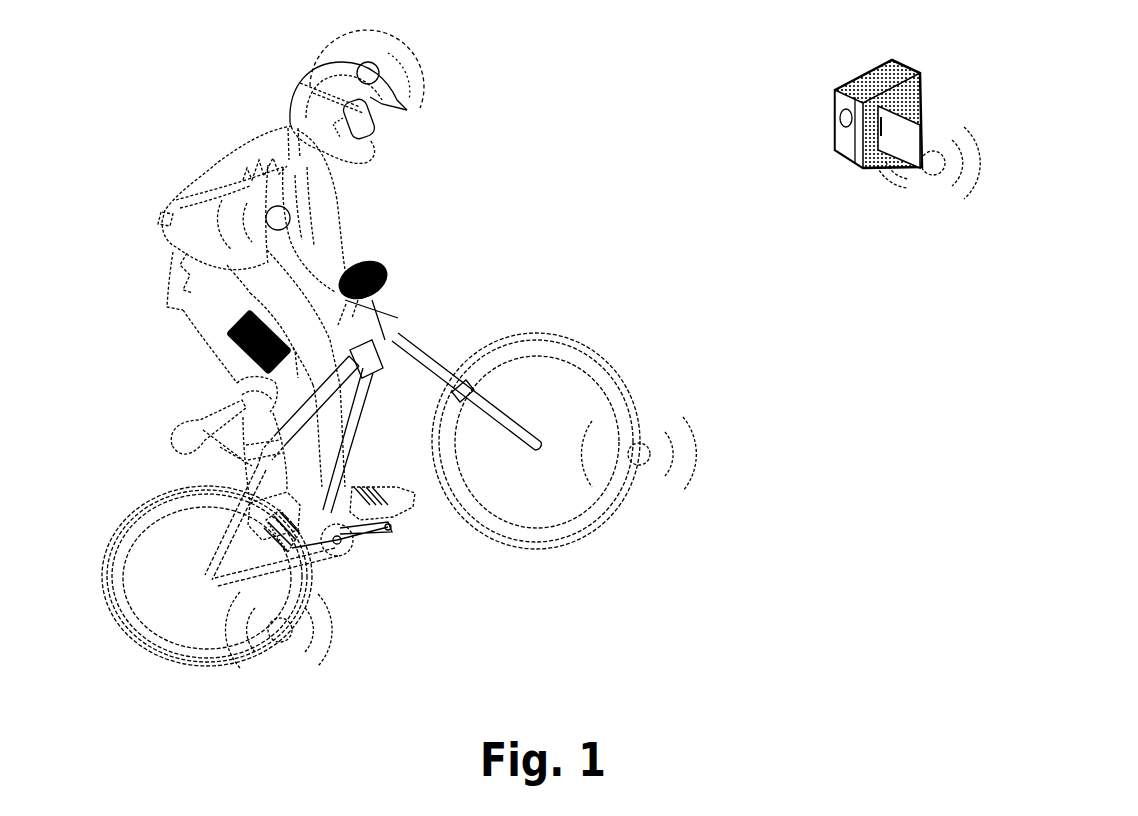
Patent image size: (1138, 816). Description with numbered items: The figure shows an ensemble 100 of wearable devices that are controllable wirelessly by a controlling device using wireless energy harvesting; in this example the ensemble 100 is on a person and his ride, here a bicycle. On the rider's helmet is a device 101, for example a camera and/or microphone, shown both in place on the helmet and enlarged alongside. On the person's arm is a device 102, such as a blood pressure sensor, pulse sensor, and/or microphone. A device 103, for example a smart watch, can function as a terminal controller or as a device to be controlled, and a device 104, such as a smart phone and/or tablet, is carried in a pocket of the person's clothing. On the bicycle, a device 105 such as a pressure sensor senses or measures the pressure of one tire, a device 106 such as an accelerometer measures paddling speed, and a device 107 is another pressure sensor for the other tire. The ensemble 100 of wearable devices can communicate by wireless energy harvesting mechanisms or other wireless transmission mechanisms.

The ensemble of wearable devices 100 is at (1129, 89).
The device on a helmet 101 is at (442, 78).
The device on the person's arm 102 is at (327, 212).
The smart watch device 103 is at (420, 280).
The smart phone device 104 is at (322, 348).
The tire pressure sensor device 105 is at (710, 459).
The accelerometer device 106 is at (307, 532).
The second tire pressure sensor device 107 is at (350, 636).